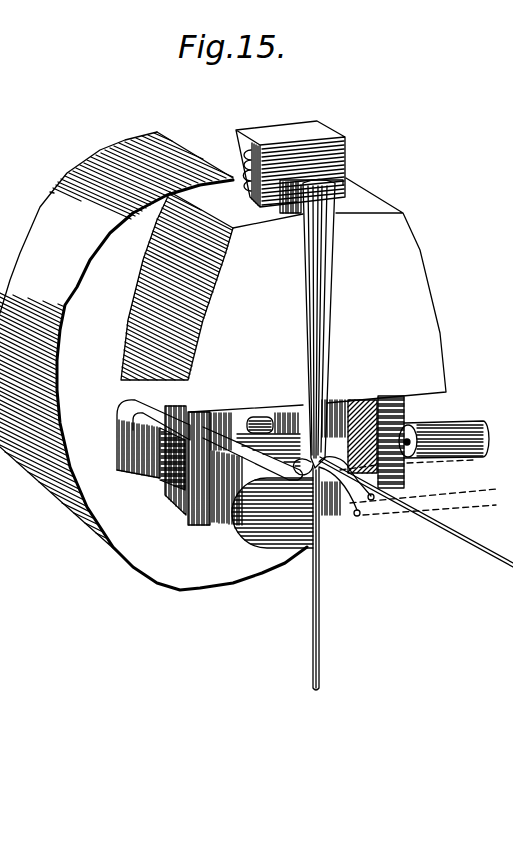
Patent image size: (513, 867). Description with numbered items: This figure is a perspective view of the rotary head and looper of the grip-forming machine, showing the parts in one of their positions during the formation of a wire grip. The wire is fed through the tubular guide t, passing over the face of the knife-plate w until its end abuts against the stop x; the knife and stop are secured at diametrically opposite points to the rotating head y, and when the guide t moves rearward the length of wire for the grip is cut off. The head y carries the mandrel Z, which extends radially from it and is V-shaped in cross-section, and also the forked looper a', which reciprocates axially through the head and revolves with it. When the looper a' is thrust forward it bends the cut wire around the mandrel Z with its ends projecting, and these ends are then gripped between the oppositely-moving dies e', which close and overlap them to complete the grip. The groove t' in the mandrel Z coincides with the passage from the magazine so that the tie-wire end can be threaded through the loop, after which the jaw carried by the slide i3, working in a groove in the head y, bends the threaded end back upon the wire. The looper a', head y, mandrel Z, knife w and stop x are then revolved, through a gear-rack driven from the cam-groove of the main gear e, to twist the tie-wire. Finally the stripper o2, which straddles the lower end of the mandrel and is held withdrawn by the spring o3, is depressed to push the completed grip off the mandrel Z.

The rotating head y is at (180, 570).
The dies e' is at (177, 382).
The stripper o2 is at (346, 146).
The spring o3 is at (237, 156).
The mandrel Z is at (328, 323).
The groove t' is at (300, 438).
The looper a' is at (296, 444).
The knife-plate w is at (398, 410).
The tubular guide t is at (444, 425).
The stop x is at (147, 474).
The slide i3 is at (289, 537).
The main gear e is at (399, 496).